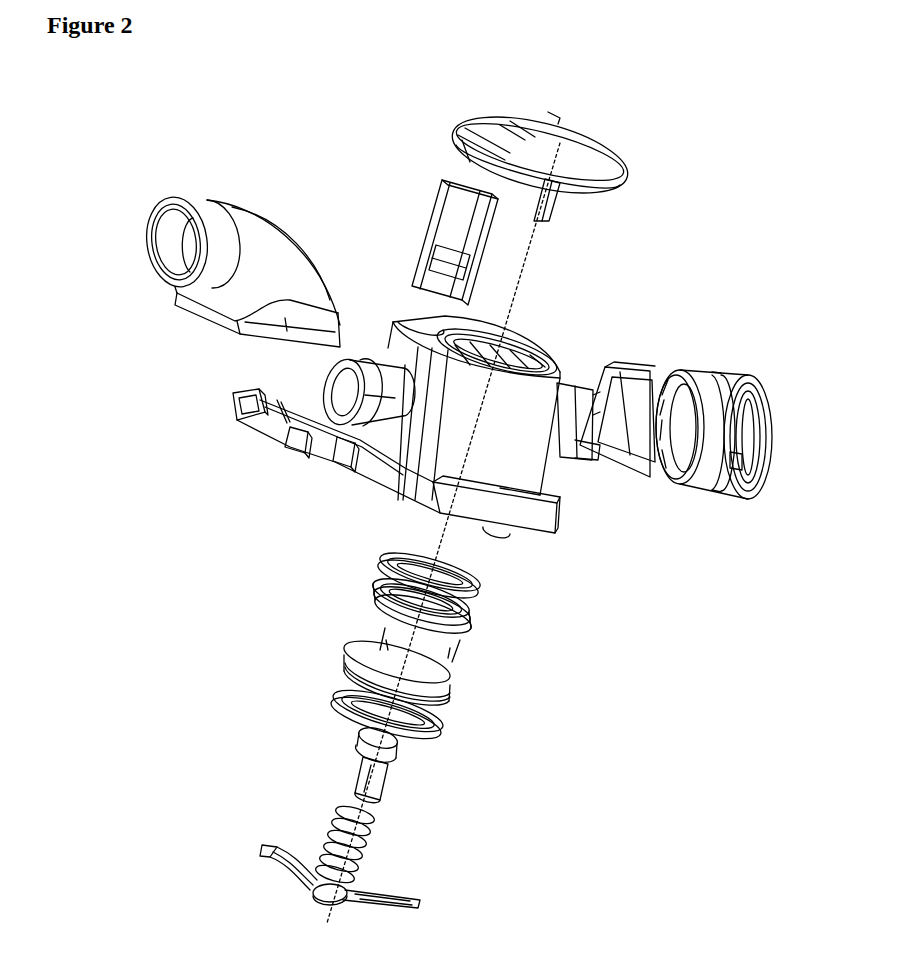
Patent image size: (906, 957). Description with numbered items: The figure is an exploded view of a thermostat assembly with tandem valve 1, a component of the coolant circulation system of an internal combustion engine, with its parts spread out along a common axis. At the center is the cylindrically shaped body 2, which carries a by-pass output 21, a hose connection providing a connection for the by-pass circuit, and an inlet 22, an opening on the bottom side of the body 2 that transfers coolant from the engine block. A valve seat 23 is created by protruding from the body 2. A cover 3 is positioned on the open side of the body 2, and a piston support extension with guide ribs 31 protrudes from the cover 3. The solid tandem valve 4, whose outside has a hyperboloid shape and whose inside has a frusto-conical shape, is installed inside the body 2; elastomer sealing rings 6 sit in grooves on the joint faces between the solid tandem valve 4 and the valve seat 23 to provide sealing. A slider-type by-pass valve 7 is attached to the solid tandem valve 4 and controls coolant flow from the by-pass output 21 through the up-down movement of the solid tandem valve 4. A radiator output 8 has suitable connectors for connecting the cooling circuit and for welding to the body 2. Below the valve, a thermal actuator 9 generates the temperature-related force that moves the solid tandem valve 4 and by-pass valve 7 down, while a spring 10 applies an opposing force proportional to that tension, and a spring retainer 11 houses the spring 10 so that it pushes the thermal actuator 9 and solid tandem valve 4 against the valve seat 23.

The thermostat assembly with tandem valve 1 is at (387, 237).
The body 2 is at (418, 464).
The by-pass output 21 is at (345, 387).
The inlet 22 is at (495, 532).
The valve seat 23 is at (495, 334).
The cover 3 is at (589, 163).
The piston support extension with guide ribs 31 is at (547, 205).
The solid tandem valve 4 is at (380, 615).
The elastomer sealing ring 6 is at (480, 587).
The by-pass valve 7 is at (457, 223).
The radiator output 8 is at (703, 470).
The thermal actuator 9 is at (397, 757).
The spring 10 is at (367, 828).
The spring retainer 11 is at (262, 846).